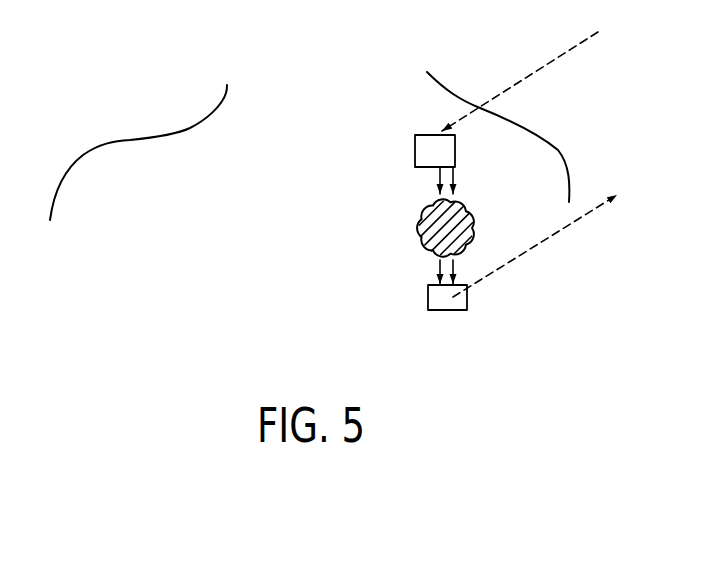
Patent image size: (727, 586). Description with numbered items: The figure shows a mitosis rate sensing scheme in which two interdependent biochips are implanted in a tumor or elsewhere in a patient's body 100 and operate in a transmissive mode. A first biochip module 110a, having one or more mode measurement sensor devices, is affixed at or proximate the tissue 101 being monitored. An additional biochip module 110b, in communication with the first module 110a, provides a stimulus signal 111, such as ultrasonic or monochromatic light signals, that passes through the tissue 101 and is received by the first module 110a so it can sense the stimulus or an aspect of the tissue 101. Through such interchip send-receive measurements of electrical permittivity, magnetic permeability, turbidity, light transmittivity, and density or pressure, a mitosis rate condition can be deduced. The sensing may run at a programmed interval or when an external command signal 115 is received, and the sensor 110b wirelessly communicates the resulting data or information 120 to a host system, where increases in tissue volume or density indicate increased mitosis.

The patient's body 100 is at (203, 150).
The tissue 101 is at (430, 238).
The first biochip module 110a is at (467, 310).
The additional biochip module 110b is at (455, 148).
The stimulus signal 111 is at (428, 185).
The external command signal 115 is at (562, 53).
The data or information 120 is at (557, 235).